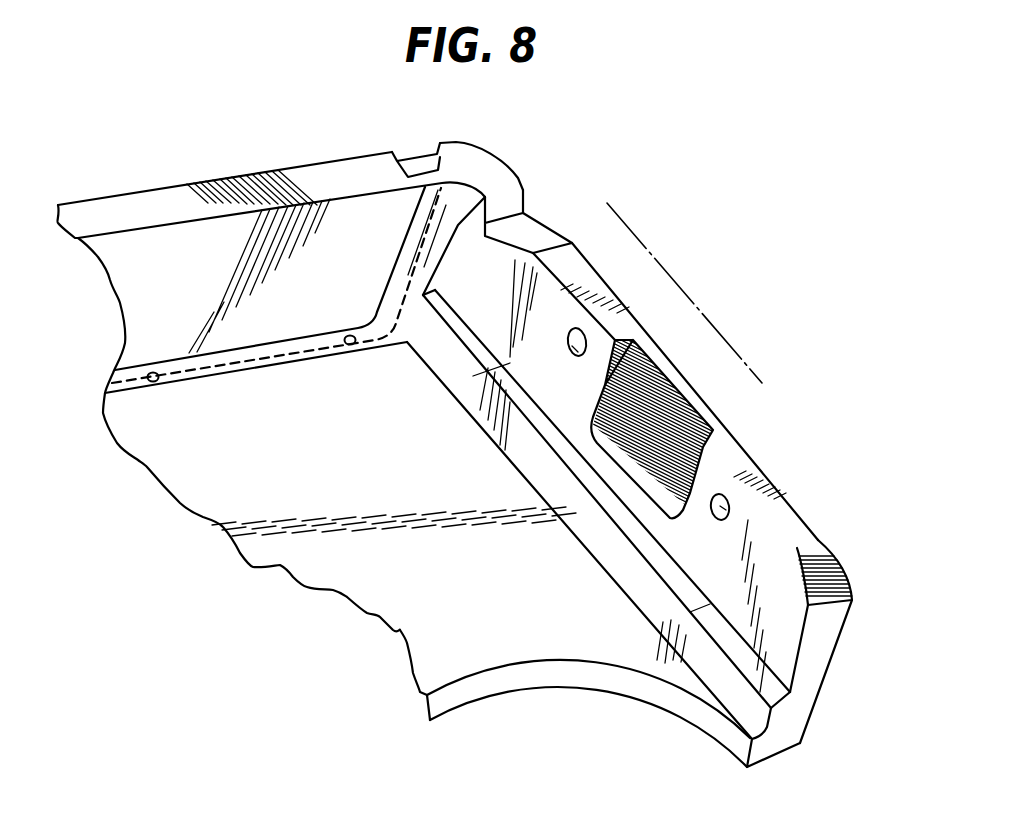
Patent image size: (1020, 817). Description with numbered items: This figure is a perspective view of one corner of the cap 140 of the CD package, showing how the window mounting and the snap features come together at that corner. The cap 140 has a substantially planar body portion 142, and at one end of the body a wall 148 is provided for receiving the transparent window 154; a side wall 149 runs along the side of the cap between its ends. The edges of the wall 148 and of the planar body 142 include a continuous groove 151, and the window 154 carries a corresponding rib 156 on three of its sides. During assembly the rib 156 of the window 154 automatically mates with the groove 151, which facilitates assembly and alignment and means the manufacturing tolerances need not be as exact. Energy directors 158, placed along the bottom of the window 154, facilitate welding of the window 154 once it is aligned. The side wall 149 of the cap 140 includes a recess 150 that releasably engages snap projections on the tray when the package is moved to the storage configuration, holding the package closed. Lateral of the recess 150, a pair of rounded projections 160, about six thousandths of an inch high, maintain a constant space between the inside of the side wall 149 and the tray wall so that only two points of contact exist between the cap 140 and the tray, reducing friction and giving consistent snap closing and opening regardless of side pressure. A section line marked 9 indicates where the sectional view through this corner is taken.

The cap 140 is at (758, 247).
The planar body portion 142 is at (322, 573).
The wall 148 is at (432, 143).
The side wall 149 is at (846, 597).
The recess 150 is at (653, 550).
The continuous groove 151 is at (452, 162).
The transparent window 154 is at (283, 177).
The rib 156 is at (397, 170).
The energy director 158 is at (158, 382).
The rounded projection 160 is at (580, 357).
The section line 9- 9 is at (780, 467).